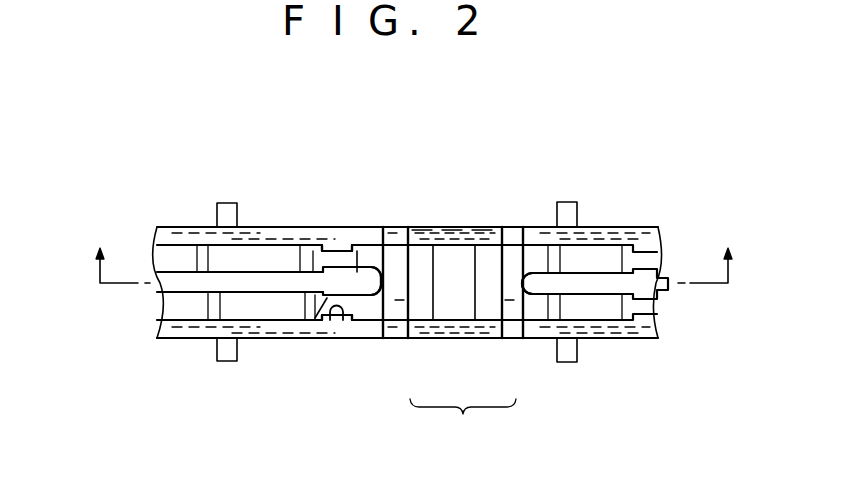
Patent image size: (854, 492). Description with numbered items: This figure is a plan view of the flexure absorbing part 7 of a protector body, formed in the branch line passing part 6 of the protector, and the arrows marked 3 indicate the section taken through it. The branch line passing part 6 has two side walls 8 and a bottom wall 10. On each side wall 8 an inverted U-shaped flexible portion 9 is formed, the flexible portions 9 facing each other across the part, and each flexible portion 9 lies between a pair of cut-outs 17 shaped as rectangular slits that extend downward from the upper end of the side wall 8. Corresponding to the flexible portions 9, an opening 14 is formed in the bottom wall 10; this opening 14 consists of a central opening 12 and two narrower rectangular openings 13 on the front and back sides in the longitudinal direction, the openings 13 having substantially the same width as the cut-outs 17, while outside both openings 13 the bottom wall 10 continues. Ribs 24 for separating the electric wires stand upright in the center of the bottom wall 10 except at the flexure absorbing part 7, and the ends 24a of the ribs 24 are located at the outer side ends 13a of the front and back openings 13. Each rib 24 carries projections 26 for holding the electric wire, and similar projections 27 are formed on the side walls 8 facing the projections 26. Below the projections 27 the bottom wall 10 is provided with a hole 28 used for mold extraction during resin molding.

The section line III-III 3 is at (414, 247).
The branch line passing part 6 is at (268, 206).
The flexure absorbing part 7 is at (475, 170).
The side wall 8 is at (303, 227).
The flexible portion 9 is at (447, 220).
The bottom wall 10 is at (600, 255).
The central opening 12 is at (455, 300).
The opening 13 is at (418, 305).
The outer side end 13a is at (393, 302).
The opening 14 is at (463, 425).
The cut-out 17 is at (402, 300).
The rib 24 is at (247, 283).
The end of rib 24a is at (401, 281).
The projection 26 is at (307, 324).
The projection 27 is at (333, 322).
The hole 28 is at (341, 250).